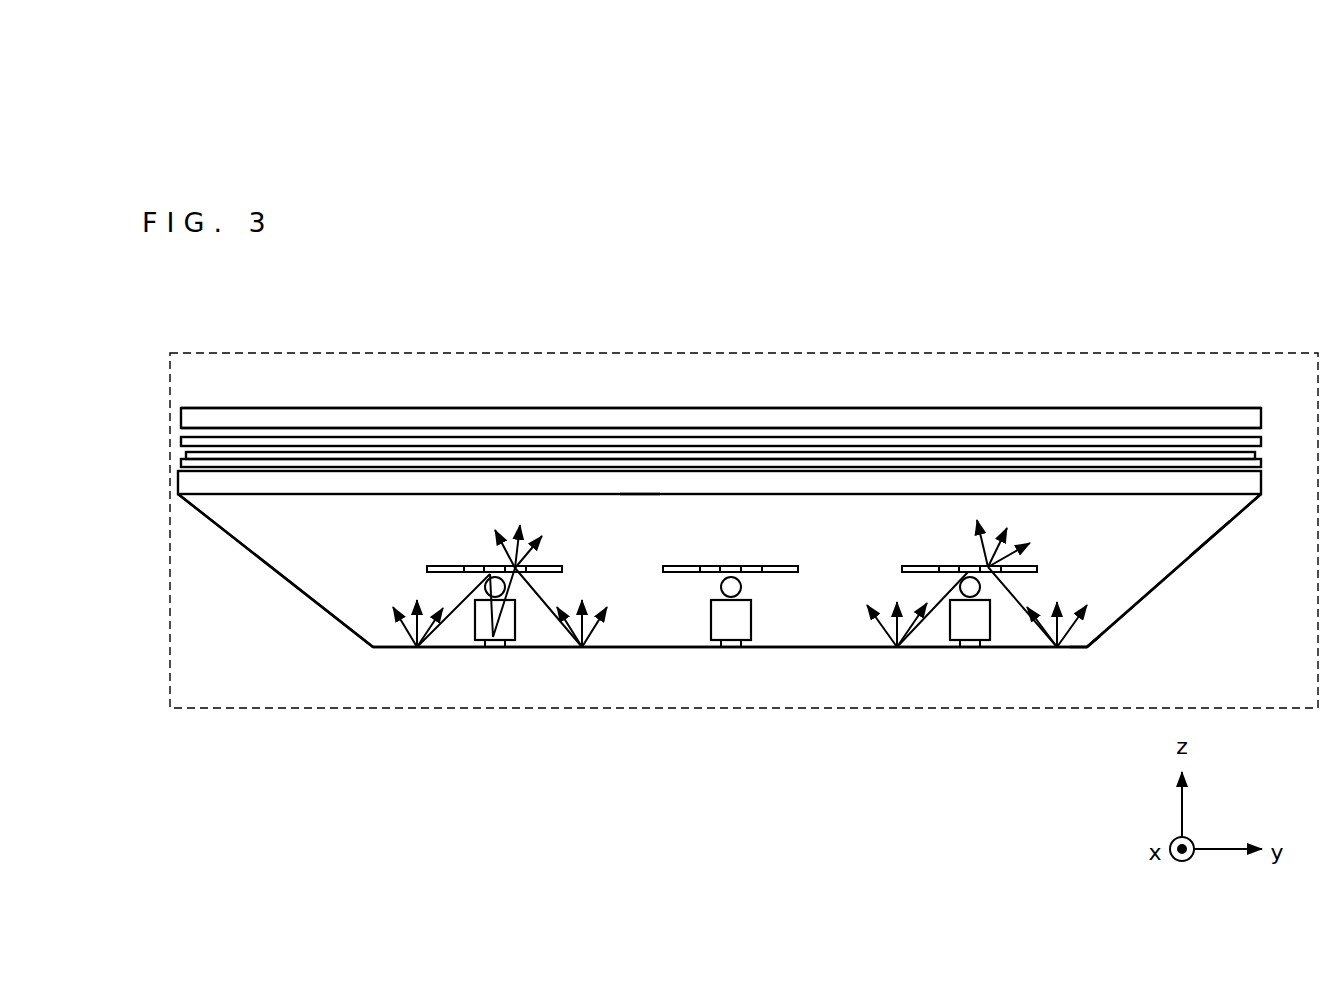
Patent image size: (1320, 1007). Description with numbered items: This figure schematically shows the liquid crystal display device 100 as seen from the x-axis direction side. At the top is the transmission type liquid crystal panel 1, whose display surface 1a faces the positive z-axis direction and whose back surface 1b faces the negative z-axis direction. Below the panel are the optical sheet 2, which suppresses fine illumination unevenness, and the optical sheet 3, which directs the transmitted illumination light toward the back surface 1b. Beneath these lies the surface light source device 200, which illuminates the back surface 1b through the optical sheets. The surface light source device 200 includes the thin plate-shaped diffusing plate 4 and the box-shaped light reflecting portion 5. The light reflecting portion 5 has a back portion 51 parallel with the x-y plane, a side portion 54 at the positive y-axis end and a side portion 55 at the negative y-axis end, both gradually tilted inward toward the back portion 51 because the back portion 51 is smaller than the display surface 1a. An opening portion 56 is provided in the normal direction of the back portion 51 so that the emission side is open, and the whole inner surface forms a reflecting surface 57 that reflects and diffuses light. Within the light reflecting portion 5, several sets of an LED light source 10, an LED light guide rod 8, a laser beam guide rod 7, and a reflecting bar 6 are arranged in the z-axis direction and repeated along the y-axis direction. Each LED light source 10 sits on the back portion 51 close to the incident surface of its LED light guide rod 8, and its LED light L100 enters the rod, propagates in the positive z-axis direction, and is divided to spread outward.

The liquid crystal display device 100 is at (1240, 352).
The liquid crystal panel 1 is at (1254, 405).
The display surface 1a is at (727, 407).
The back surface 1b is at (202, 428).
The optical sheet 2 is at (1263, 440).
The optical sheet 3 is at (1263, 467).
The diffusing plate 4 is at (1264, 482).
The light reflecting portion 5 is at (1145, 573).
The back portion 51 is at (387, 648).
The side portion 54 is at (1132, 612).
The side portion 55 is at (302, 590).
The opening portion 56 is at (637, 503).
The reflecting surface 57 is at (1097, 622).
The reflecting bar 6 is at (677, 574).
The laser beam guide rod 7 is at (723, 585).
The LED light guide rod 8 is at (752, 620).
The LED light source 10 is at (730, 648).
The LED light L100 is at (453, 607).
The surface light source device 200 is at (1210, 560).